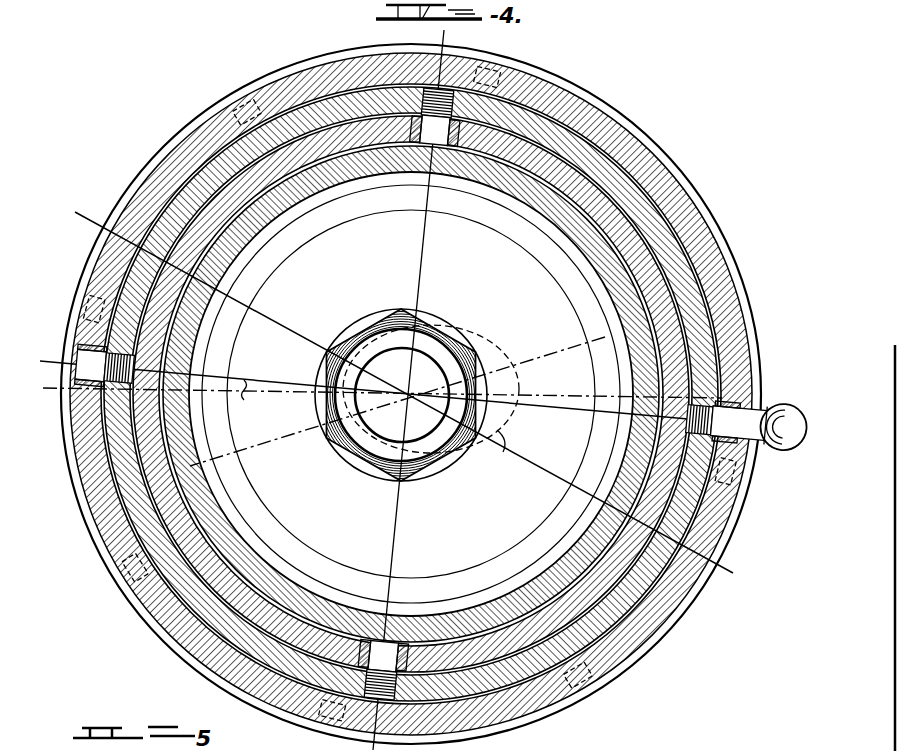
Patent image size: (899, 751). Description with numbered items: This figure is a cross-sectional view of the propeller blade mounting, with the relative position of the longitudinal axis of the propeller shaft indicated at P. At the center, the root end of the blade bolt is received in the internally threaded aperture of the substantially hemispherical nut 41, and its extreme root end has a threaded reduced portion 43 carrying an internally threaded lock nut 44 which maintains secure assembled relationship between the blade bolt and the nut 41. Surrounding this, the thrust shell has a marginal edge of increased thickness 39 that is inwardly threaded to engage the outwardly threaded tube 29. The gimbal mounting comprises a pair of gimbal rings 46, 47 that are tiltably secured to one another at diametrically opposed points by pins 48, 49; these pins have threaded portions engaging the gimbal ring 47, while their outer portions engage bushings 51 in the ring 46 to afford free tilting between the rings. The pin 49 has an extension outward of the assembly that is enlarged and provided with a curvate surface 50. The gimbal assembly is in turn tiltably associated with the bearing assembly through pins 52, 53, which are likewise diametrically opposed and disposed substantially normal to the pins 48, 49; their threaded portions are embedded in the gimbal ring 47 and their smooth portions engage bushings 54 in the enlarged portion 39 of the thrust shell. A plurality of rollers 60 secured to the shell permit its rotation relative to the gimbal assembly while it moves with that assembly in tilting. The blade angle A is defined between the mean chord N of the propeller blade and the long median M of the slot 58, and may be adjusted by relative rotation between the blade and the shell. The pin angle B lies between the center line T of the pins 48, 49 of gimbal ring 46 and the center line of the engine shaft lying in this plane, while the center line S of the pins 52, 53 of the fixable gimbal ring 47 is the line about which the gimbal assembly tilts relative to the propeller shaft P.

The outwardly threaded tube 29 is at (527, 597).
The marginal edge of increased thickness 39 is at (498, 640).
The hemispherical nut 41 is at (273, 337).
The reduced portion 43 is at (404, 368).
The lock nut 44 is at (365, 342).
The gimbal ring 46 is at (672, 192).
The gimbal ring 47 is at (684, 288).
The pin 48 is at (62, 363).
The pin 49 is at (758, 458).
The curvate surface 50 is at (787, 417).
The bushings 51 is at (82, 340).
The pin 52 is at (402, 134).
The pin 53 is at (394, 650).
The bushings 54 is at (432, 140).
The slot 58 is at (497, 323).
The rollers 60 is at (246, 95).
The center line of the pins S is at (418, 386).
The center line of the pins T is at (361, 377).
The longitudinal axis of the propeller shaft P is at (50, 389).
The long median of the slot M is at (408, 393).
The mean chord of the propeller blade N is at (413, 400).
The blade angle A is at (490, 453).
The pin angle B is at (241, 399).